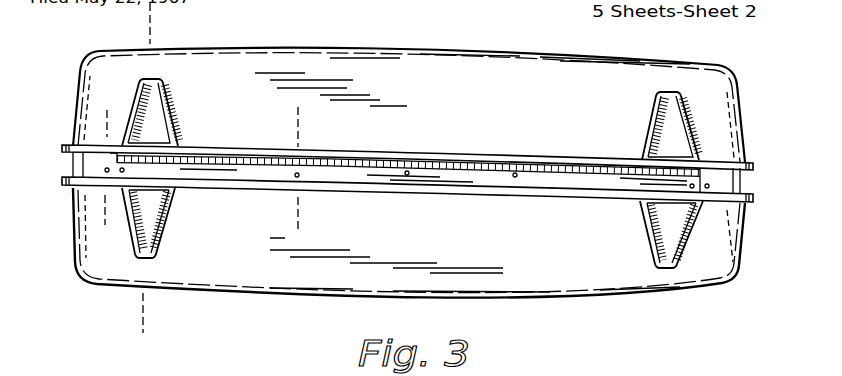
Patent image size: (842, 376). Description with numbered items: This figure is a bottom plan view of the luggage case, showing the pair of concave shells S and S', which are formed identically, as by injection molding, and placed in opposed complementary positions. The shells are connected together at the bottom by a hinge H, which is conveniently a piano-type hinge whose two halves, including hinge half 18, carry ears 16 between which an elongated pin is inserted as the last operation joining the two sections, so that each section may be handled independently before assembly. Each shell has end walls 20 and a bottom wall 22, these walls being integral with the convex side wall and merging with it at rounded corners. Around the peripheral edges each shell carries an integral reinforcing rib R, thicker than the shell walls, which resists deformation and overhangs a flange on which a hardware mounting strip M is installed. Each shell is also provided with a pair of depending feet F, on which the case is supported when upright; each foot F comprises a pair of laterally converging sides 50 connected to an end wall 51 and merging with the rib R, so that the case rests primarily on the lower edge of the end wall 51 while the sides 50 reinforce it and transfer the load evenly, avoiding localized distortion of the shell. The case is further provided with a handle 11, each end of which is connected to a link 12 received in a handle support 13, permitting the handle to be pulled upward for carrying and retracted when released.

The handle 11 is at (85, 118).
The link 12 is at (270, 117).
The handle support 13 is at (122, 15).
The hinge ears 16 is at (245, 157).
The hinge half 18 is at (490, 184).
The end wall 20 is at (76, 96).
The bottom wall 22 is at (406, 99).
The laterally converging sides 50 is at (130, 105).
The foot end wall 51 is at (145, 78).
The concave shell S is at (472, 42).
The concave shell S' is at (475, 319).
The rib R is at (407, 151).
The hardware mounting strip M is at (754, 180).
The hinge H is at (492, 165).
The foot F is at (175, 95).